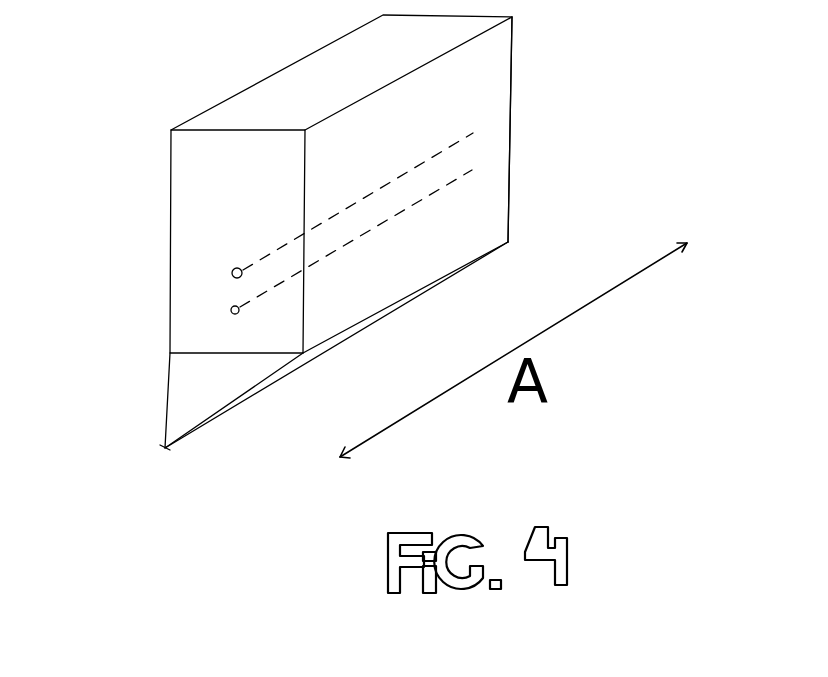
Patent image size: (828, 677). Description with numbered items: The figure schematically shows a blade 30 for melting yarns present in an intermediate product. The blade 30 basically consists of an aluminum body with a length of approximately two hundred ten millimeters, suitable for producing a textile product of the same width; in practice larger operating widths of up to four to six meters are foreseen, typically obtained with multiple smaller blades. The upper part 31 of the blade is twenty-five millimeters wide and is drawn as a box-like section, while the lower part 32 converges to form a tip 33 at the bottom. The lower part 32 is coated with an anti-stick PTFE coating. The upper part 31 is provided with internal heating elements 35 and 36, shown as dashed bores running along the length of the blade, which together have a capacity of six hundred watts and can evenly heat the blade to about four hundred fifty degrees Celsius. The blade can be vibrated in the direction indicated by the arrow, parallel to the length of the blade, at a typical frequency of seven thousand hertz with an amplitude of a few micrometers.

The blade 30 is at (252, 40).
The upper part 31 is at (512, 80).
The lower part 32 is at (167, 383).
The tip 33 is at (163, 456).
The internal heating element 35 is at (235, 268).
The internal heating element 36 is at (231, 311).